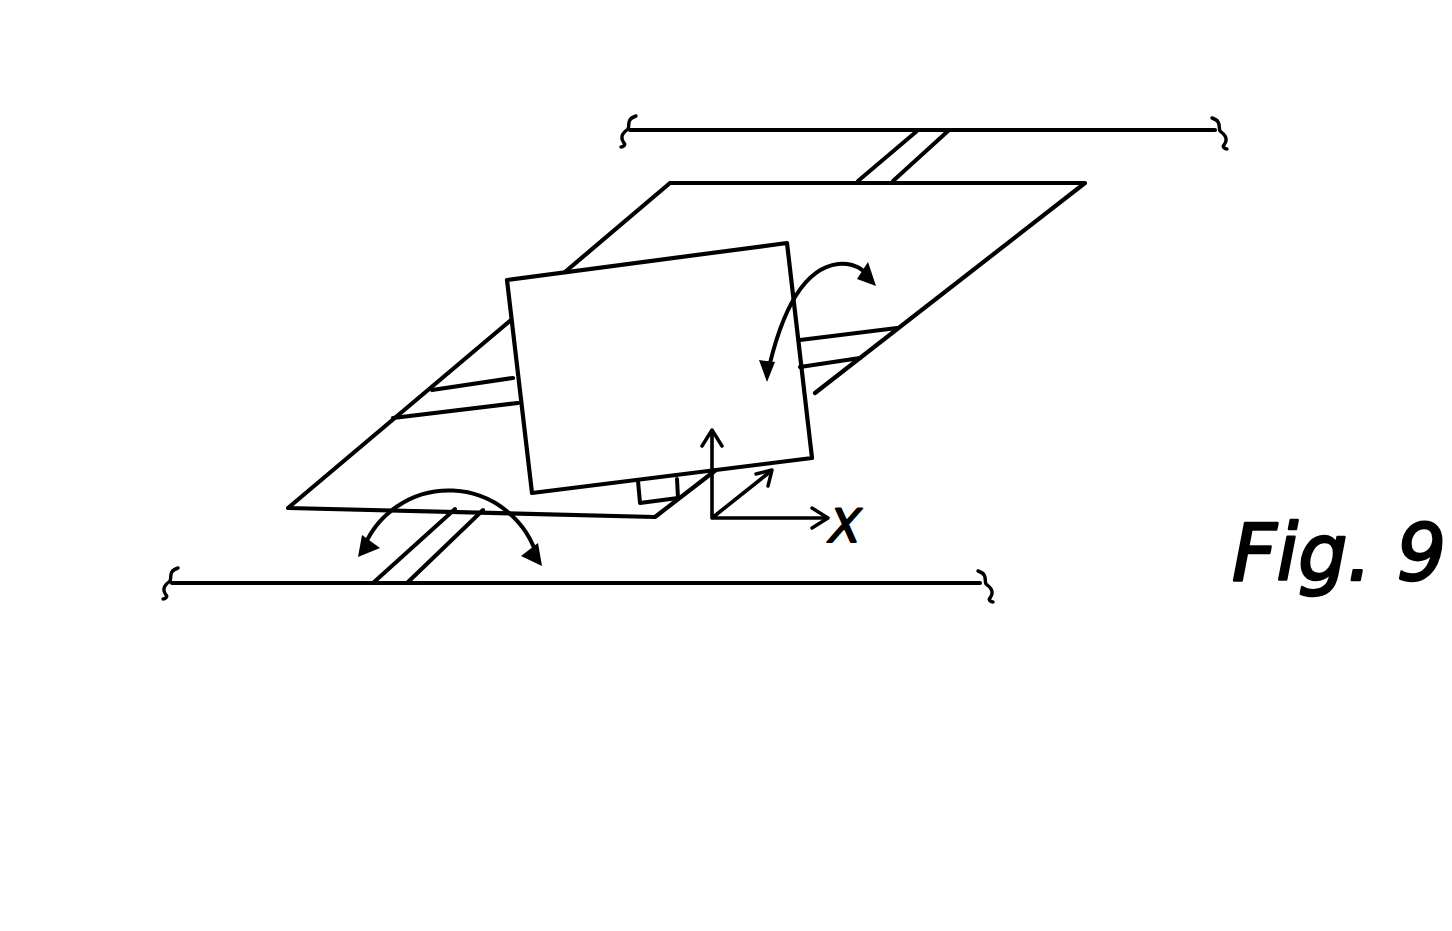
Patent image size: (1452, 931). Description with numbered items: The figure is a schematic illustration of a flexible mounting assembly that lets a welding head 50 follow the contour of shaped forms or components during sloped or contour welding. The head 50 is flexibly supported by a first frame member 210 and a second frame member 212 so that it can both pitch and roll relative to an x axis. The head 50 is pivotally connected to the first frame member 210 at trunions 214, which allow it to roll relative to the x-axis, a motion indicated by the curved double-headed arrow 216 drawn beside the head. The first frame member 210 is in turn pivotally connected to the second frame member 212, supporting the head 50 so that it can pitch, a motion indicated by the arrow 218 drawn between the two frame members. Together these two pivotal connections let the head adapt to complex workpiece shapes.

The head 50 is at (718, 248).
The first frame member 210 is at (935, 299).
The second frame member 212 is at (1013, 130).
The trunions 214 is at (465, 387).
The arrow 216 is at (828, 263).
The arrow 218 is at (413, 489).